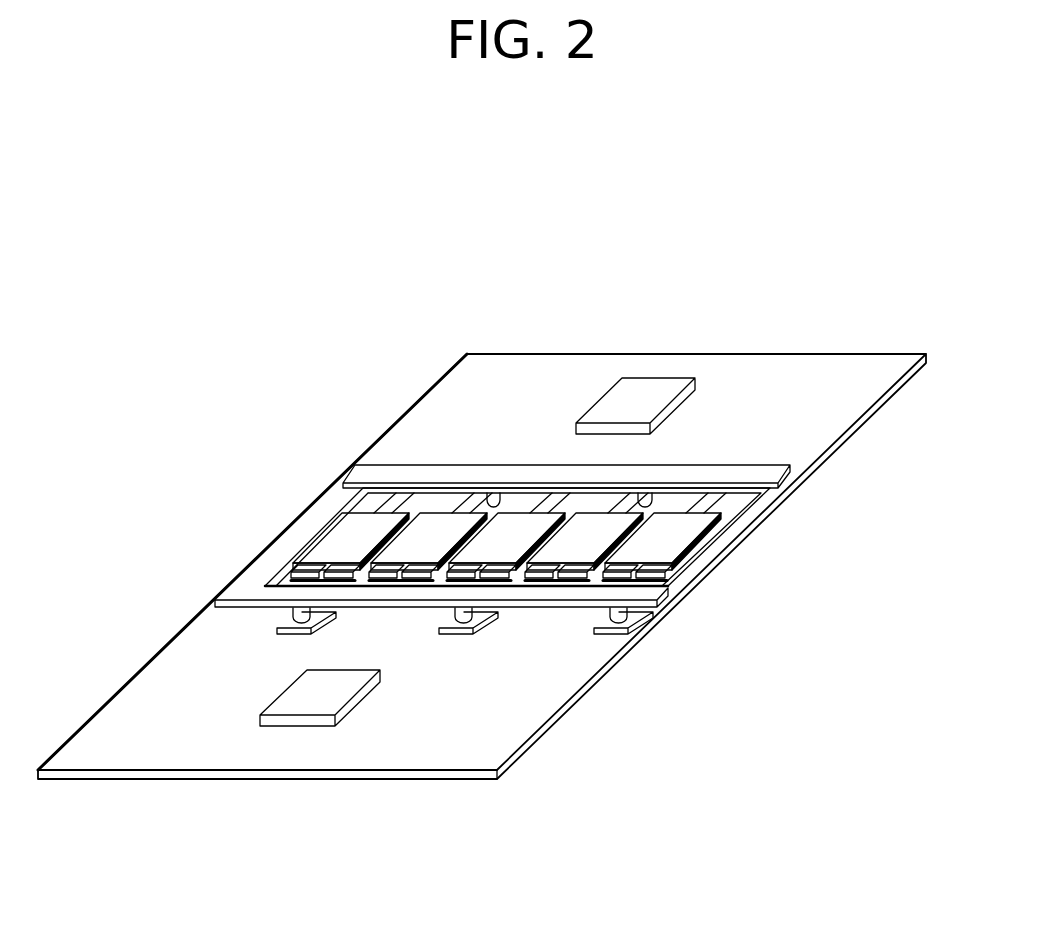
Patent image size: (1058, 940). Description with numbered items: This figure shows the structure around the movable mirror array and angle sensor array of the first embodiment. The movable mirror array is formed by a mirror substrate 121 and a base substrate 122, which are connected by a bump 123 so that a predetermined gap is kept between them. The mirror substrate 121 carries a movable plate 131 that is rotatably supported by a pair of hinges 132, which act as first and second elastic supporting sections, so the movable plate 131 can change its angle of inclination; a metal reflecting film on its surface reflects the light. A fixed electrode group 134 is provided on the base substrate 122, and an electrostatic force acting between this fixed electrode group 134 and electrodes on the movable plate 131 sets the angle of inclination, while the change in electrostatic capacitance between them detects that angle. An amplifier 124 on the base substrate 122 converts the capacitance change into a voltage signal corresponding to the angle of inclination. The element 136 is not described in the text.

The mirror substrate 121 is at (302, 528).
The base substrate 122 is at (202, 654).
The bump 123 is at (633, 612).
The amplifier 124 is at (648, 388).
The movable plate 131 is at (695, 528).
The hinge 132 is at (723, 495).
The fixed electrode group 134 is at (675, 575).
The mounting bar 136 is at (632, 612).